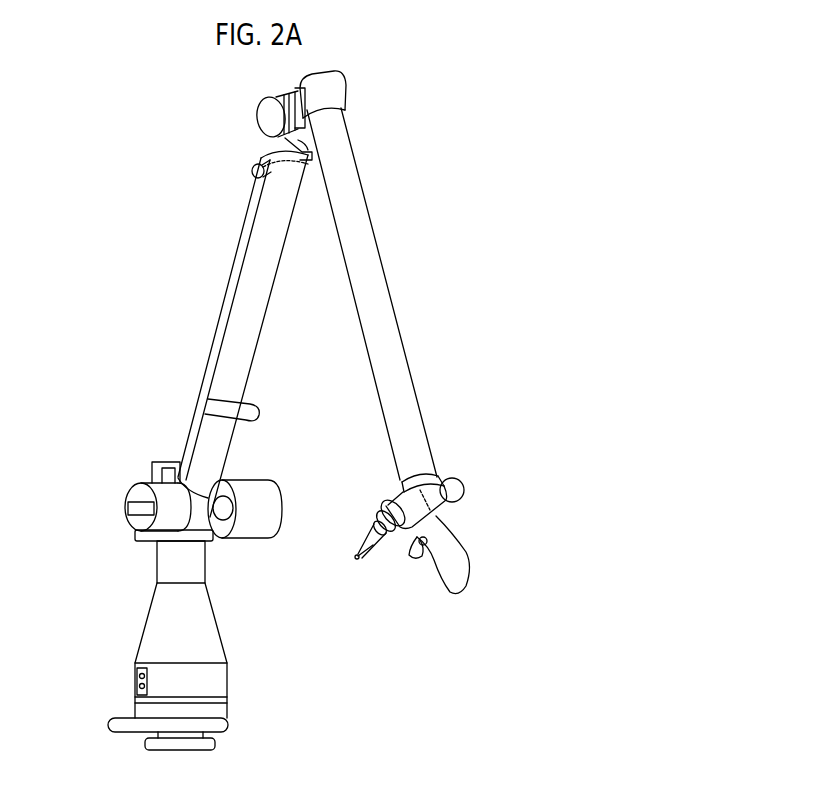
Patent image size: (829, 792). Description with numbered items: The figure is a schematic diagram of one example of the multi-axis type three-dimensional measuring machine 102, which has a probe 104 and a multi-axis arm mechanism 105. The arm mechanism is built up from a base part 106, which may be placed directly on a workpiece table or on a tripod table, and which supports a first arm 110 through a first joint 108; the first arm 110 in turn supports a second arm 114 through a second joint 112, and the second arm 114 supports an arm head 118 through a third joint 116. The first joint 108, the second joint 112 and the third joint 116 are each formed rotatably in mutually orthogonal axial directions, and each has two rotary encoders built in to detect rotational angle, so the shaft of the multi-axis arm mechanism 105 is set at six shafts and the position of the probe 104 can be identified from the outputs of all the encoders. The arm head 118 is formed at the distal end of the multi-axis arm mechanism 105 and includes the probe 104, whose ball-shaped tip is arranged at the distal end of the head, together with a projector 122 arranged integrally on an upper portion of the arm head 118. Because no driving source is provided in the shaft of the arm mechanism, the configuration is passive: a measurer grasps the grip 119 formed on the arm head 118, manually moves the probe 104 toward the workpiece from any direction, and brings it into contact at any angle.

The multi-axis type three-dimensional measuring machine 102 is at (494, 98).
The probe 104 is at (360, 558).
The multi-axis arm mechanism 105 is at (429, 224).
The base part 106 is at (218, 628).
The first joint 108 is at (127, 520).
The first arm 110 is at (233, 342).
The second joint 112 is at (262, 113).
The second arm 114 is at (403, 373).
The third joint 116 is at (458, 483).
The arm head 118 is at (427, 535).
The grip 119 is at (458, 568).
The projector 122 is at (390, 503).